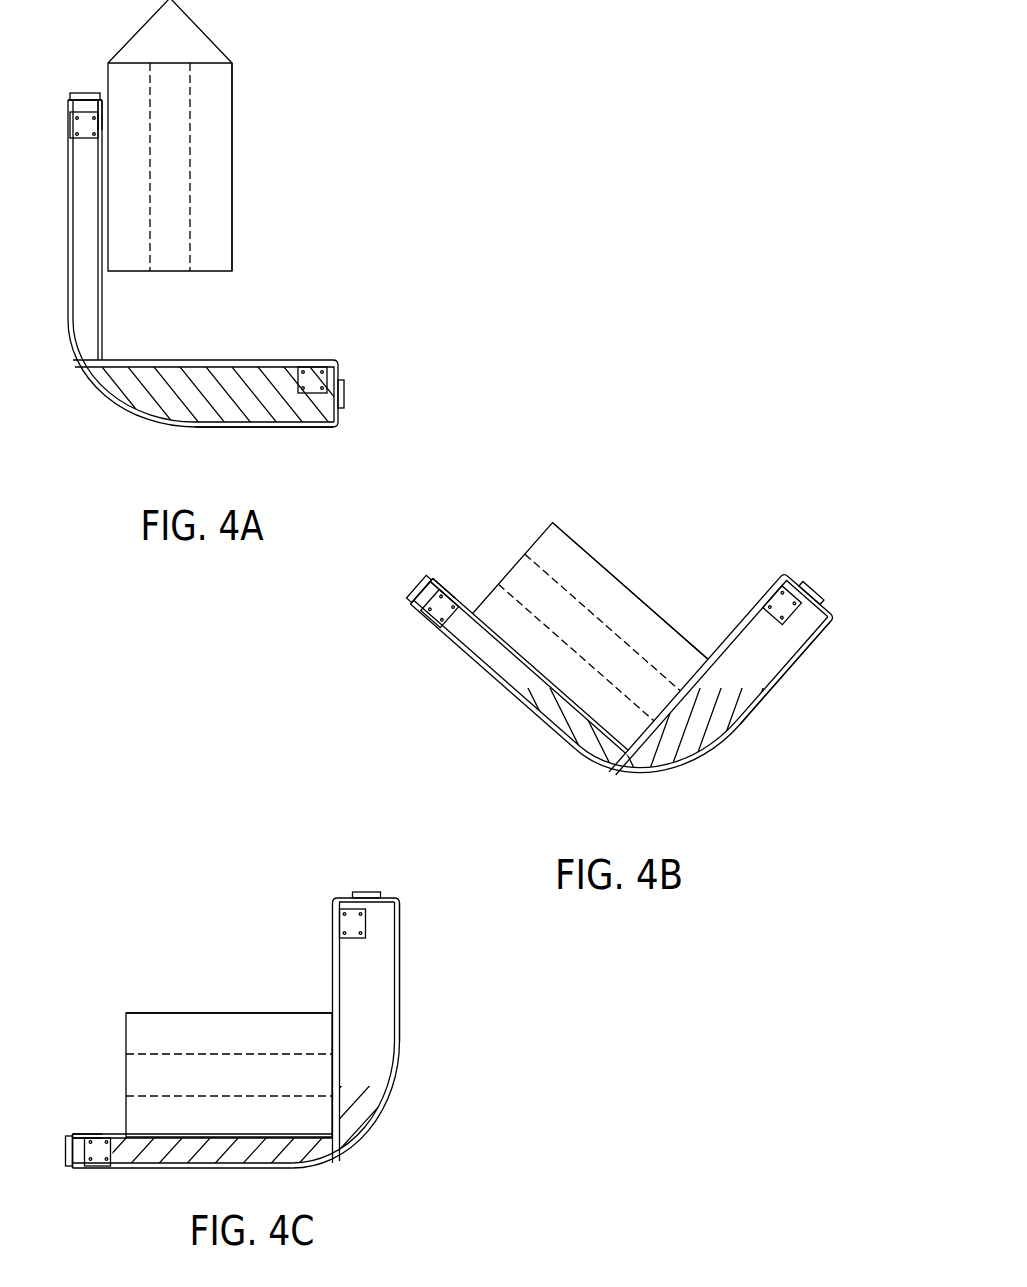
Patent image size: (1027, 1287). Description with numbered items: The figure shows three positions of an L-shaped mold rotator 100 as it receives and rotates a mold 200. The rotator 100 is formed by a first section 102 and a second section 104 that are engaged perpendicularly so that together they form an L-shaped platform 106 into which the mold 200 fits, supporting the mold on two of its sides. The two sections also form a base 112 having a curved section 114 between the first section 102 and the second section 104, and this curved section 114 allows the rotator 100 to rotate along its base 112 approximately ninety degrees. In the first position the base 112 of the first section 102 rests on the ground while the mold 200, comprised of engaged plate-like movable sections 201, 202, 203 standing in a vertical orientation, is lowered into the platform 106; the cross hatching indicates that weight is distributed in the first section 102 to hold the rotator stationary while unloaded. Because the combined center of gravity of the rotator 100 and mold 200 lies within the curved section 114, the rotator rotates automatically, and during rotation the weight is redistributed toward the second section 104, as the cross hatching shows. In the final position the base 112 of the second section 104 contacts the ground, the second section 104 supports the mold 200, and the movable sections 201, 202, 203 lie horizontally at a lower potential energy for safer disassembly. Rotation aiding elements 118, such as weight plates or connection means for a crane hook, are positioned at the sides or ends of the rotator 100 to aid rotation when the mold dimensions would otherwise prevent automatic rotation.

In FIG. 4A, the mold rotator 100 is at (211, 264).
In FIG. 4B, the mold rotator 100 is at (620, 603).
In FIG. 4C, the mold rotator 100 is at (242, 984).
In FIG. 4A, the first section 102 is at (277, 434).
In FIG. 4B, the first section 102 is at (797, 660).
In FIG. 4C, the first section 102 is at (398, 954).
In FIG. 4A, the second section 104 is at (105, 107).
In FIG. 4B, the second section 104 is at (443, 588).
In FIG. 4C, the second section 104 is at (100, 1135).
In FIG. 4A, the L-shaped platform 106 is at (102, 320).
In FIG. 4B, the L-shaped platform 106 is at (575, 705).
In FIG. 4C, the L-shaped platform 106 is at (278, 1137).
In FIG. 4A, the base 112 is at (233, 430).
In FIG. 4B, the base 112 is at (765, 700).
In FIG. 4C, the base 112 is at (398, 1030).
In FIG. 4A, the curved section 114 is at (104, 402).
In FIG. 4B, the curved section 114 is at (640, 780).
In FIG. 4C, the curved section 114 is at (375, 1134).
In FIG. 4A, the rotation aiding elements 118 is at (87, 97).
In FIG. 4B, the rotation aiding elements 118 is at (418, 588).
In FIG. 4C, the rotation aiding elements 118 is at (368, 894).
In FIG. 4A, the mold 200 is at (232, 90).
In FIG. 4B, the mold 200 is at (650, 605).
In FIG. 4C, the mold 200 is at (240, 1013).
In FIG. 4A, the movable section 201 is at (131, 75).
In FIG. 4B, the movable section 201 is at (503, 623).
In FIG. 4C, the movable section 201 is at (137, 1110).
In FIG. 4A, the movable section 202 is at (163, 77).
In FIG. 4B, the movable section 202 is at (513, 577).
In FIG. 4C, the movable section 202 is at (137, 1072).
In FIG. 4A, the movable section 203 is at (222, 148).
In FIG. 4B, the movable section 203 is at (600, 578).
In FIG. 4C, the movable section 203 is at (180, 1027).